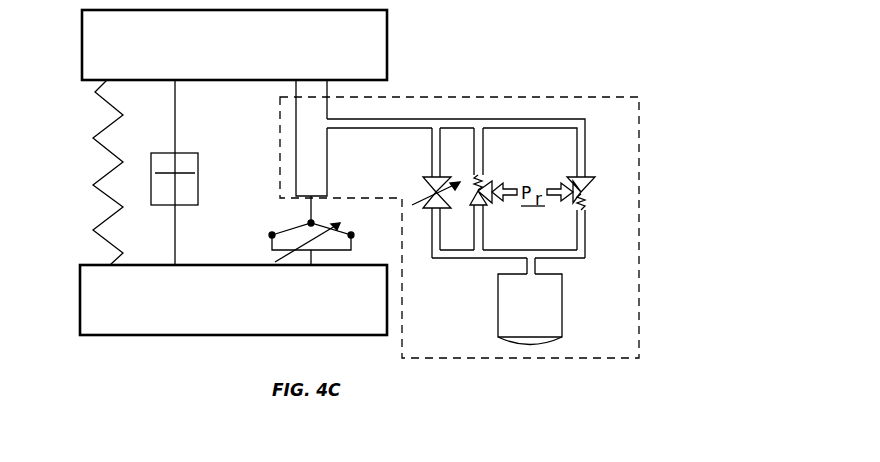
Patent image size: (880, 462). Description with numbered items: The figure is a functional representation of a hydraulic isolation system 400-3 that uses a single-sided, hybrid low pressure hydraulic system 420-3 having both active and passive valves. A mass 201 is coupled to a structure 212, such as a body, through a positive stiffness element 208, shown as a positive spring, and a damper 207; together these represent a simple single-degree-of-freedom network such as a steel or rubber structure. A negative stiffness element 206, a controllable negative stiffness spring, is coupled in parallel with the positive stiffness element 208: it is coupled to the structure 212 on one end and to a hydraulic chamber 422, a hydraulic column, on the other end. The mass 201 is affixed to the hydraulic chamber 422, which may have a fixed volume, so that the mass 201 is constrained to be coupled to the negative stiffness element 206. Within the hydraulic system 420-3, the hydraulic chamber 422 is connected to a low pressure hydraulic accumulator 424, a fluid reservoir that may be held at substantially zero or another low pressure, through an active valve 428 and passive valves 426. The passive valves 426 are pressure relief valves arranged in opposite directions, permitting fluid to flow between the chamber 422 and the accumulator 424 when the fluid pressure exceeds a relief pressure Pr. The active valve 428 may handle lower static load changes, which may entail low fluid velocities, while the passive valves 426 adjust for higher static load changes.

The mass 201 is at (234, 45).
The structure 212 is at (233, 300).
The positive stiffness element 208 is at (108, 170).
The damper 207 is at (184, 152).
The negative stiffness element 206 is at (270, 236).
The hydraulic chamber 422 is at (328, 181).
The active valve 428 is at (430, 194).
The passive valve 426 is at (592, 190).
The hydraulic accumulator 424 is at (530, 309).
The hybrid low pressure hydraulic system 420-3 is at (458, 97).
The hydraulic isolation system 400-3 is at (648, 73).